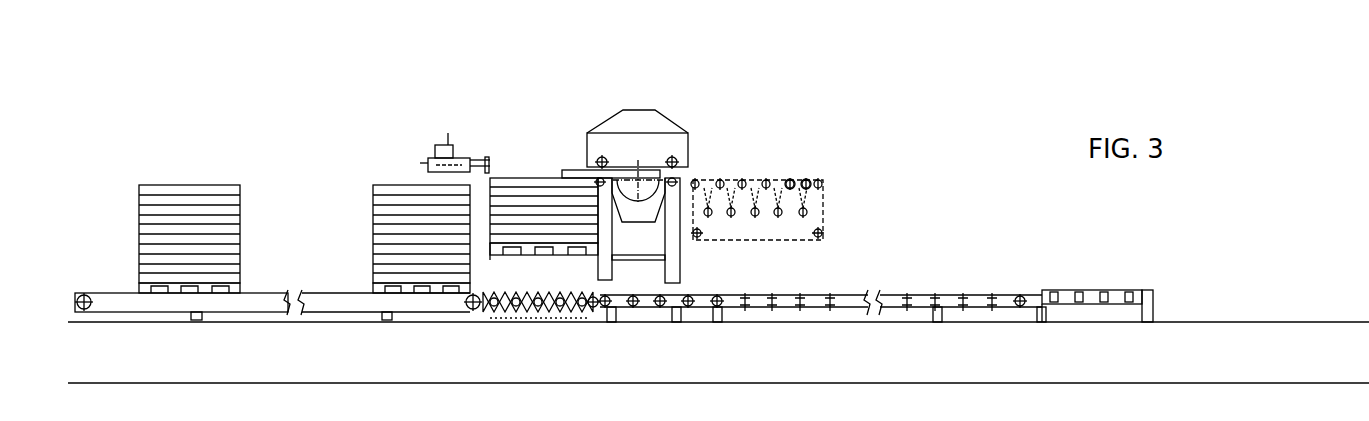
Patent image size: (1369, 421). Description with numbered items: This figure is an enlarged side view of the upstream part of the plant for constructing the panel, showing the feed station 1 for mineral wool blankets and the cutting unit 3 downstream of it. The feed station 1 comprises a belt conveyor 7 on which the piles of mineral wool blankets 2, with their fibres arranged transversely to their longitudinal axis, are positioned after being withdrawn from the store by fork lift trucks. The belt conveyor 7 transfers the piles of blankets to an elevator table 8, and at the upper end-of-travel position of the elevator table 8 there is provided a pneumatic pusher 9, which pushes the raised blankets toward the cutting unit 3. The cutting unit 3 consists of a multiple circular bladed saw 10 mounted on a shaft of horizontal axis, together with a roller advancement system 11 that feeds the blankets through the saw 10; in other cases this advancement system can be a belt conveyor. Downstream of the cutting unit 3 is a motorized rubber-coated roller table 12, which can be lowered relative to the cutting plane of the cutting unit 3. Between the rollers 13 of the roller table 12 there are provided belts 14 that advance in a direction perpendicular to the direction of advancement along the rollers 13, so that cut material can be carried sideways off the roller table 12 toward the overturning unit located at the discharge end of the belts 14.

The feed station 1 is at (160, 330).
The piles of mineral wool blankets 2 is at (193, 185).
The cutting unit 3 is at (594, 155).
The belt conveyor 7 is at (288, 322).
The elevator table 8 is at (551, 250).
The pneumatic pusher 9 is at (437, 150).
The multiple circular bladed saw 10 is at (632, 160).
The roller advancement system 11 is at (598, 160).
The motorized rubber-coated roller table 12 is at (788, 161).
The rollers 13 is at (789, 178).
The belts 14 is at (807, 178).